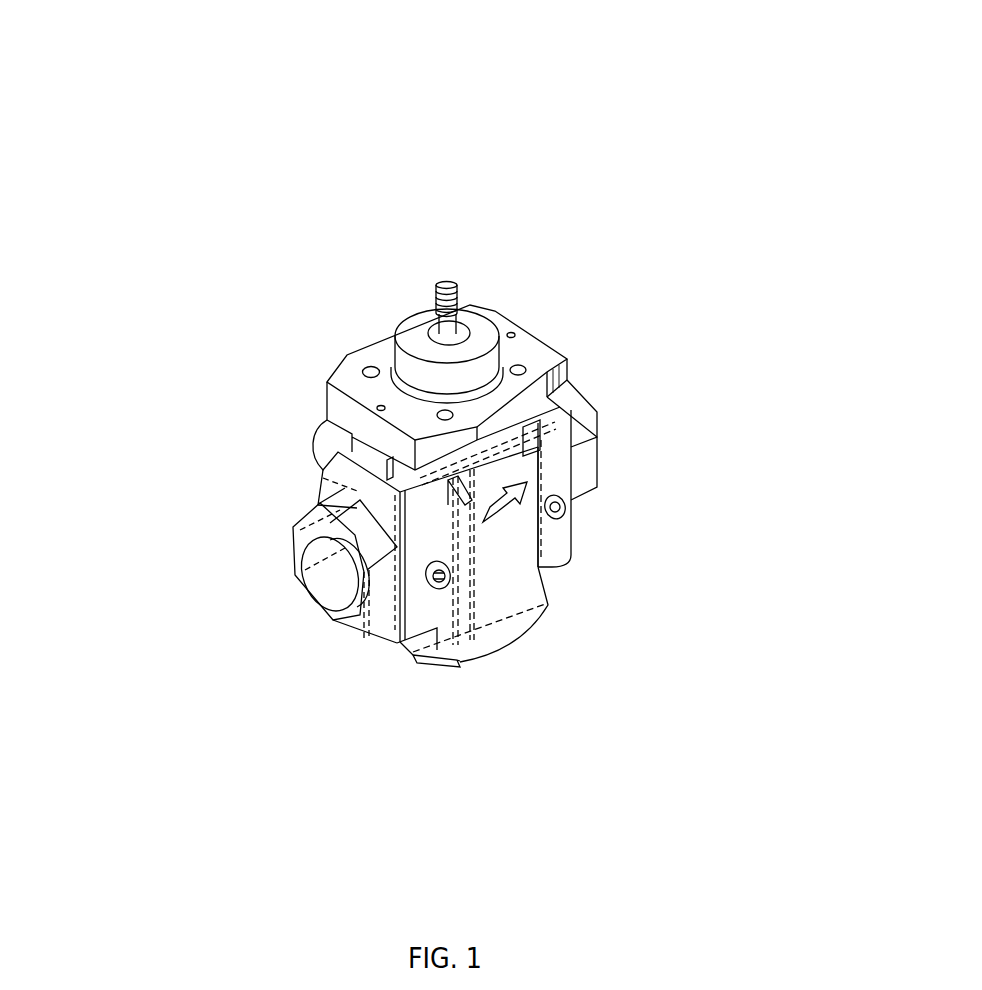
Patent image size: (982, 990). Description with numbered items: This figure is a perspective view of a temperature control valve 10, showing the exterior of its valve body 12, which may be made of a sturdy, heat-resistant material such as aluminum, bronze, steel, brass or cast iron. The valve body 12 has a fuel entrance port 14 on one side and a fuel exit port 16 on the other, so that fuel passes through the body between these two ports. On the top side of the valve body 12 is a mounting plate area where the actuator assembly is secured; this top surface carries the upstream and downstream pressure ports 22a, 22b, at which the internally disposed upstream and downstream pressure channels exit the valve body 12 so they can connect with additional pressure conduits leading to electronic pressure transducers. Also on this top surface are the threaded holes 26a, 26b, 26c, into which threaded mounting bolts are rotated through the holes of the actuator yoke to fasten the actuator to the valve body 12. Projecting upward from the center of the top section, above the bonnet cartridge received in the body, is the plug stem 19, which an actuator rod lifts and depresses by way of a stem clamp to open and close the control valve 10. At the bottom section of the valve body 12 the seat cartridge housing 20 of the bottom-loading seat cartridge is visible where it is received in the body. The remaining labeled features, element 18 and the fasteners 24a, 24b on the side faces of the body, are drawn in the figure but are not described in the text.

The temperature control valve 10 is at (158, 442).
The valve body 12 is at (327, 481).
The fuel entrance port 14 is at (313, 557).
The fuel exit port 16 is at (597, 412).
The bonnet cap 18 is at (472, 355).
The plug stem 19 is at (459, 308).
The seat cartridge housing 20 is at (450, 665).
The upstream pressure port 22a is at (378, 407).
The downstream pressure port 22b is at (522, 332).
The screw 24a is at (433, 590).
The screw 24b is at (570, 503).
The threaded hole 26a is at (373, 368).
The threaded hole 26b is at (443, 410).
The threaded hole 26c is at (522, 369).